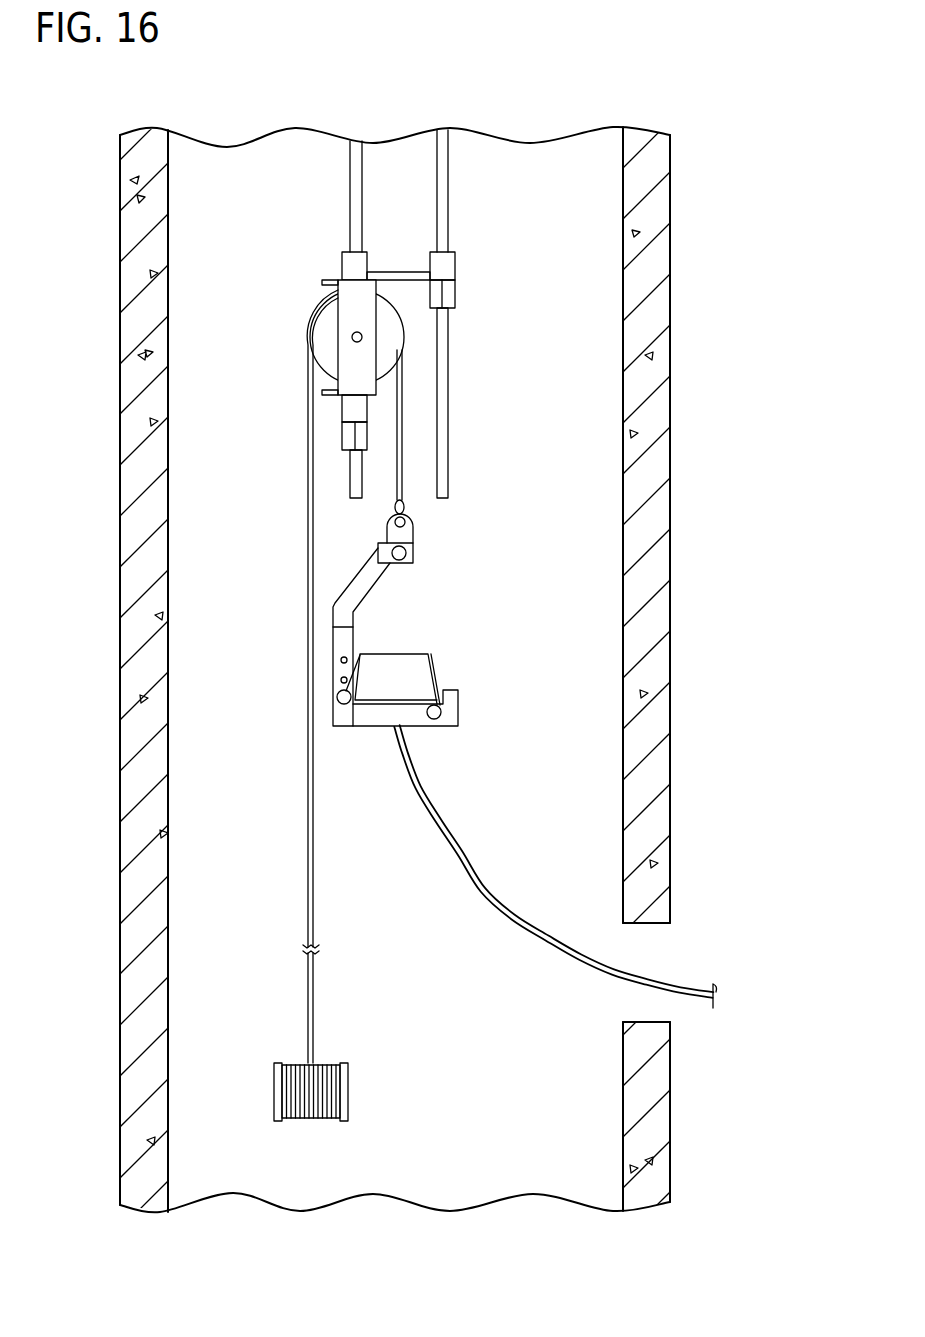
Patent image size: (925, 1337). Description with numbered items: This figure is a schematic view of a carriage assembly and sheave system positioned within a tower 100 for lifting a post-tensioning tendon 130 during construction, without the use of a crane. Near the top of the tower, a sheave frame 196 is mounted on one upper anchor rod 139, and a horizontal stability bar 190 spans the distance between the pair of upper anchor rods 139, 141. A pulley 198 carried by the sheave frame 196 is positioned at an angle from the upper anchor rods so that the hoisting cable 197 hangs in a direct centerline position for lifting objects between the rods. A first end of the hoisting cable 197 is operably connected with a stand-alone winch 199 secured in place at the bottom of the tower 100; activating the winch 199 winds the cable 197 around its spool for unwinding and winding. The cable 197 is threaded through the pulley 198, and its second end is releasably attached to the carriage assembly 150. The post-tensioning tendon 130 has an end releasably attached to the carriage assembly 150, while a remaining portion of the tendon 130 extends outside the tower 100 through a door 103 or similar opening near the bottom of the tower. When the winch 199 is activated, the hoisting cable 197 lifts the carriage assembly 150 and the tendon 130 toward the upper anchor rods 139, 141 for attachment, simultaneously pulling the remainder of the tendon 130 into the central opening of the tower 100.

The tower 100 is at (718, 154).
The door 103 is at (663, 952).
The post-tensioning tendon 130 is at (462, 857).
The upper anchor rod 139 is at (349, 191).
The upper anchor rod 141 is at (449, 193).
The carriage assembly 150 is at (423, 620).
The horizontal stability bar 190 is at (399, 268).
The sheave frame 196 is at (355, 302).
The hoisting cable 197 is at (308, 822).
The pulley 198 is at (330, 331).
The stand-alone winch 199 is at (349, 1090).